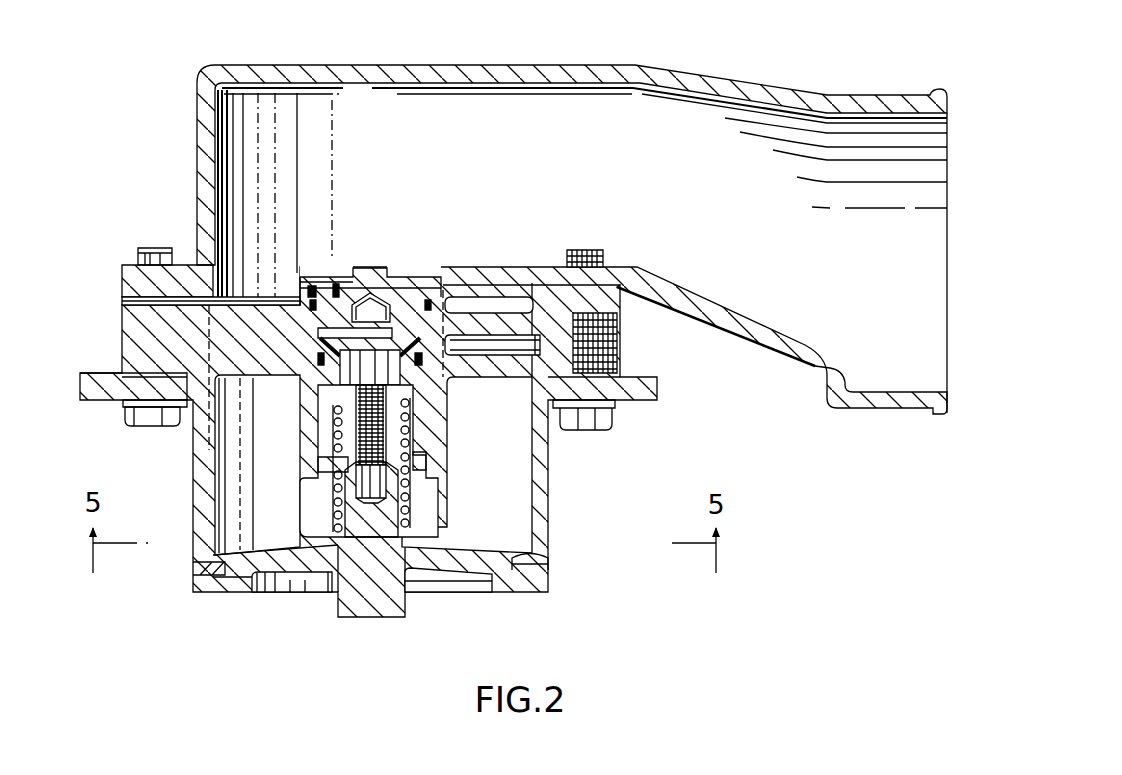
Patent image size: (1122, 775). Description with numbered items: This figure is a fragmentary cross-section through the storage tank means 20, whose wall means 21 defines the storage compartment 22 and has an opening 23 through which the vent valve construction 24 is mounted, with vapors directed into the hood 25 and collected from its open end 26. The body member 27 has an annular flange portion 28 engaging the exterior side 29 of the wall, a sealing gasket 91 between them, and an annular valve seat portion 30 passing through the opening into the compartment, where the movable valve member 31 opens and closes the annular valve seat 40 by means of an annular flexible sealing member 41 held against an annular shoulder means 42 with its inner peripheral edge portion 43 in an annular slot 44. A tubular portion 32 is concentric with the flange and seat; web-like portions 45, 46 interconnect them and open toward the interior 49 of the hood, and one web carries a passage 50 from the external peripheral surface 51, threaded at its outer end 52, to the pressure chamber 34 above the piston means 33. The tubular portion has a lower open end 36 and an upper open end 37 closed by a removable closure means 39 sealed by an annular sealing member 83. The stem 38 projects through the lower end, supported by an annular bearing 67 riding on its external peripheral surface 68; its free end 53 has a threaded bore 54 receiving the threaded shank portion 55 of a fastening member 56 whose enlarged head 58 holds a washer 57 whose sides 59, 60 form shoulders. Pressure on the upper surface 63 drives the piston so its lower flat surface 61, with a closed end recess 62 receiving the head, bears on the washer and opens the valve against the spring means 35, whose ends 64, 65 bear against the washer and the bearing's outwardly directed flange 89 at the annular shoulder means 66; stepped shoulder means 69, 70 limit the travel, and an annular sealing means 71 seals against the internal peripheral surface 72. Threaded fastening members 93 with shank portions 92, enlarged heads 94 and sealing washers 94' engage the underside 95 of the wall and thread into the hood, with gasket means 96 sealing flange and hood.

The storage tank means 20 is at (97, 268).
The wall means 21 is at (103, 385).
The storage compartment 22 is at (640, 466).
The opening 23 is at (548, 440).
The vent valve construction 24 is at (177, 488).
The hood 25 is at (705, 85).
The open end 26 is at (918, 392).
The body member 27 is at (548, 500).
The annular flange portion 28 is at (137, 318).
The exterior side 29 is at (660, 383).
The annular valve seat portion 30 is at (203, 540).
The movable valve member 31 is at (470, 567).
The tubular portion 32 is at (450, 437).
The piston means 33 is at (412, 390).
The pressure chamber 34 is at (395, 290).
The spring means 35 is at (423, 458).
The open end 36 is at (420, 536).
The open end 37 is at (433, 292).
The stem 38 is at (340, 521).
The removable closure means 39 is at (372, 283).
The annular valve seat 40 is at (540, 557).
The annular flexible sealing member 41 is at (537, 568).
The annular shoulder means 42 is at (535, 572).
The inner peripheral edge portion 43 is at (517, 568).
The annular slot 44 is at (507, 575).
The web-like portion 45 is at (243, 297).
The web-like portion 46 is at (493, 310).
The interior 49 is at (483, 97).
The passage 50 is at (520, 312).
The external peripheral surface 51 is at (642, 300).
The outer end 52 is at (597, 367).
The free end 53 is at (328, 420).
The threaded bore 54 is at (330, 443).
The threaded shank portion 55 is at (340, 457).
The fastening member 56 is at (412, 412).
The washer 57 is at (313, 348).
The enlarged head 58 is at (330, 283).
The side 59 is at (337, 383).
The side 60 is at (327, 403).
The lower flat surface 61 is at (447, 405).
The closed end recess 62 is at (418, 370).
The upper surface 63 is at (332, 288).
The end 64 is at (317, 417).
The end 65 is at (410, 522).
The annular shoulder means 66 is at (337, 533).
The annular bearing 67 is at (392, 555).
The external peripheral surface 68 is at (337, 505).
The internal stepped annular shoulder means 69 is at (453, 472).
The internal stepped annular shoulder means 70 is at (318, 480).
The annular sealing means 71 is at (440, 345).
The internal peripheral surface 72 is at (428, 452).
The annular sealing member 83 is at (447, 300).
The outwardly directed flange 89 is at (417, 513).
The sealing gasket 91 is at (125, 348).
The shank portion 92 is at (160, 248).
The threaded fastening member 93 is at (145, 416).
The enlarged head 94 is at (152, 444).
The sealing washer 94' is at (100, 422).
The underside 95 is at (660, 403).
The gasket means 96 is at (137, 288).